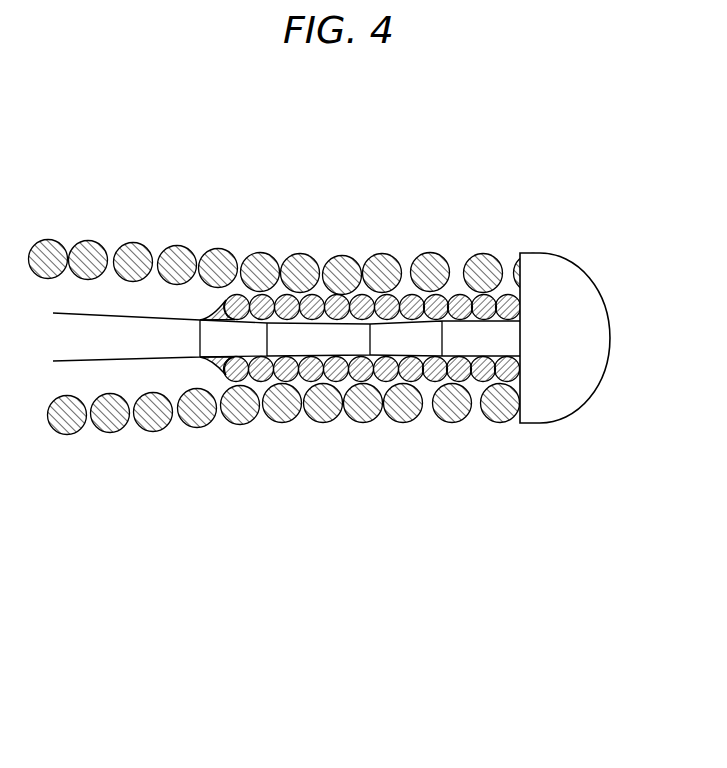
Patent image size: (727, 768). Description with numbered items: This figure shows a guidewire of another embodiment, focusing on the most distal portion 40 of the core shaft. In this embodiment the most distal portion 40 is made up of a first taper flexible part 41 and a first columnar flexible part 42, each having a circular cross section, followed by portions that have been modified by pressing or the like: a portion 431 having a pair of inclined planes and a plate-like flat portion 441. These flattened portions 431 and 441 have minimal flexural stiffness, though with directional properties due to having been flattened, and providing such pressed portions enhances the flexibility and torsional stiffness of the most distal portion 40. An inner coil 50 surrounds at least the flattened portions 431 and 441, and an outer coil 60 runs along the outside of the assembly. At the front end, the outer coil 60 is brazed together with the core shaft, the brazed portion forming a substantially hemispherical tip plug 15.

The tip plug 15 is at (558, 355).
The most distal portion 40 is at (197, 541).
The first taper flexible part 41 is at (243, 342).
The first columnar flexible part 42 is at (325, 342).
The portion having a pair of inclined planes 431 is at (413, 342).
The plate-like flat portion 441 is at (483, 342).
The inner coil 50 is at (313, 307).
The outer coil 60 is at (220, 268).